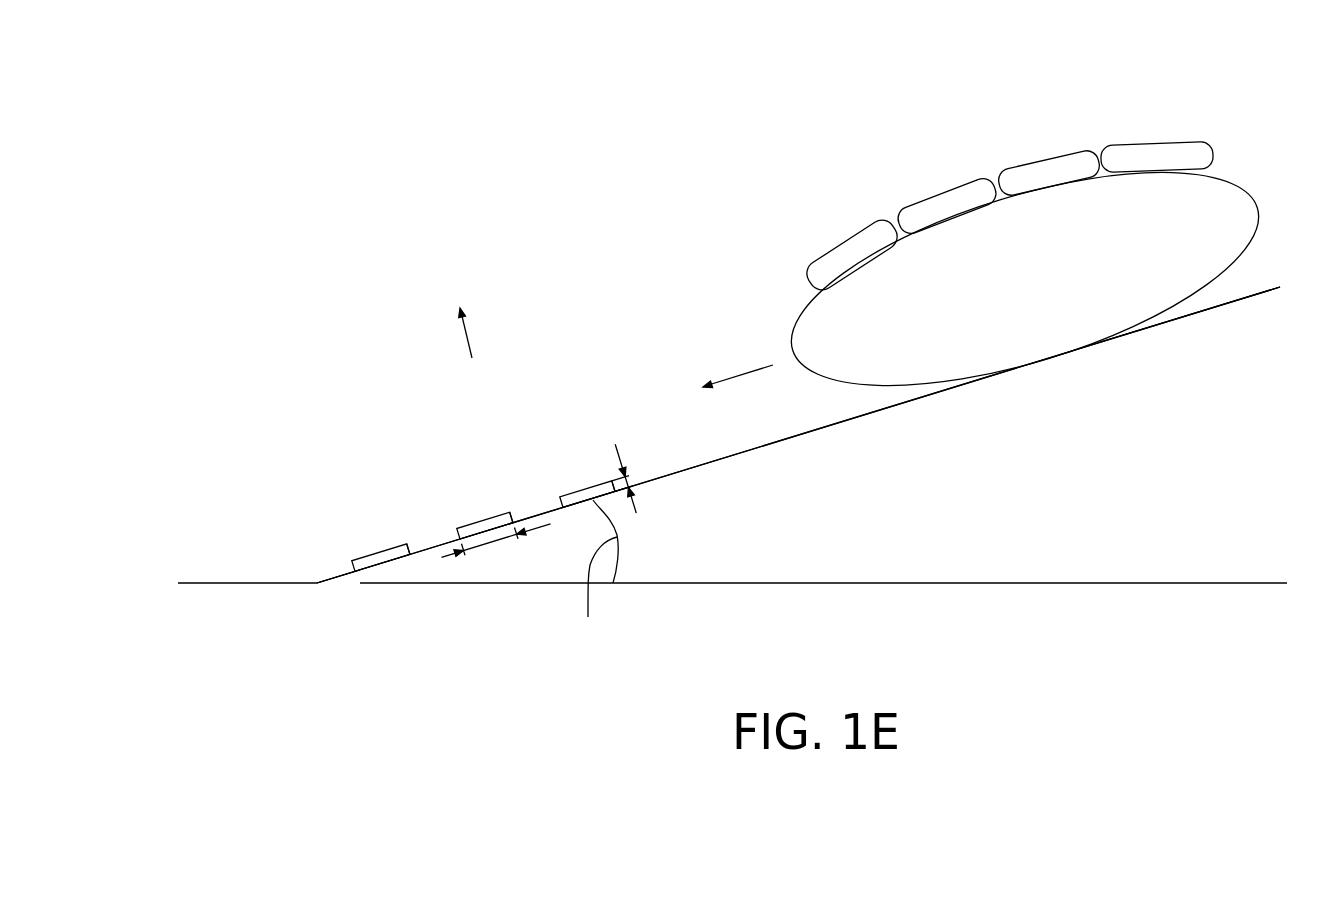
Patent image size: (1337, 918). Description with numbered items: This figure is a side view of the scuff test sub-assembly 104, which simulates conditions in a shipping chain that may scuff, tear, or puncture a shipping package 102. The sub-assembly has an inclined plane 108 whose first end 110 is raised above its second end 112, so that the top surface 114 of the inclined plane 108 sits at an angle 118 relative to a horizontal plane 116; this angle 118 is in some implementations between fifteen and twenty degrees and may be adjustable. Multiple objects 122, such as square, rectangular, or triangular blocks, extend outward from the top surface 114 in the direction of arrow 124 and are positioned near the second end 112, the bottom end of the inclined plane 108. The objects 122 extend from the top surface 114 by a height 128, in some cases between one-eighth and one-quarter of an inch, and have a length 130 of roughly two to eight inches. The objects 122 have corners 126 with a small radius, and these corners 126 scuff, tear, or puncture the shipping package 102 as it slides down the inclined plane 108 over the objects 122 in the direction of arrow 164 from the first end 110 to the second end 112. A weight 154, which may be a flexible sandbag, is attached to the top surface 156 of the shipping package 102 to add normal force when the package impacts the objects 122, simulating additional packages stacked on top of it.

The shipping package 102 is at (1230, 177).
The scuff test sub-assembly 104 is at (461, 80).
The inclined plane 108 is at (793, 450).
The first end 110 is at (1262, 293).
The second end 112 is at (318, 585).
The top surface 114 is at (1247, 298).
The horizontal plane 116 is at (790, 585).
The angle 118 is at (594, 575).
The objects 122 is at (375, 547).
The arrow 124 is at (471, 341).
The corners 126 is at (408, 540).
The height 128 is at (637, 503).
The length 130 is at (493, 542).
The weight 154 is at (1043, 153).
The top surface 156 is at (947, 202).
The arrow 164 is at (742, 376).